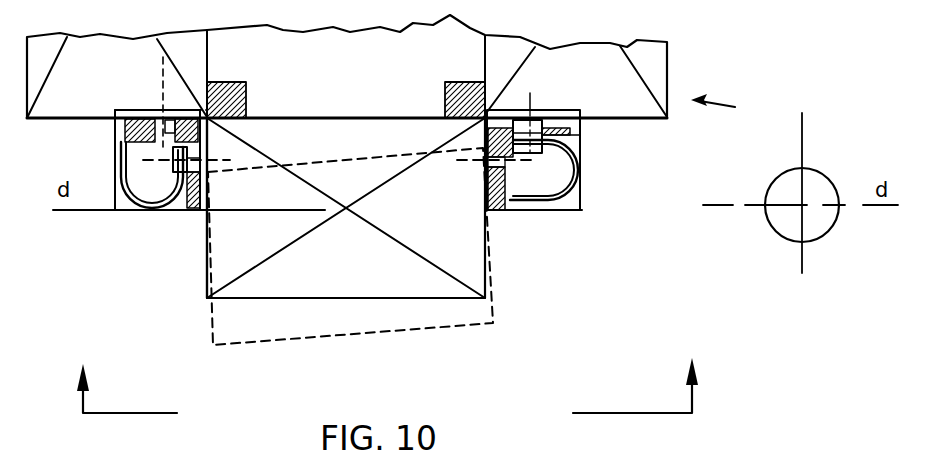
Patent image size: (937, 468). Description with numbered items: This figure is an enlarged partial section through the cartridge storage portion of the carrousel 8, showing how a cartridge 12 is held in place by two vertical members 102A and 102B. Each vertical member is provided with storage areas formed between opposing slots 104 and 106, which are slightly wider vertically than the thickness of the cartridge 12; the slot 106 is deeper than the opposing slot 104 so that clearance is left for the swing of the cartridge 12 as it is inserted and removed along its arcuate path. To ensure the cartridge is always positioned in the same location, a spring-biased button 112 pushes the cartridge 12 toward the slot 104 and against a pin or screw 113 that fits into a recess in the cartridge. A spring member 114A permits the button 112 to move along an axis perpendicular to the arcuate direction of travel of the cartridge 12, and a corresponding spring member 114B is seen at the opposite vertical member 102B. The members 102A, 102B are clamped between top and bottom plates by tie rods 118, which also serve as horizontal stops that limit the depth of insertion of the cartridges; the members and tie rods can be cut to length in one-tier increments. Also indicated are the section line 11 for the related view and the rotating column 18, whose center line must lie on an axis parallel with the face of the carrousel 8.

The carrousel 8 is at (757, 117).
The section line 11- 11 is at (394, 374).
The cartridge 12 is at (658, 63).
The rotating column 18 is at (812, 180).
The vertical member 102A is at (138, 110).
The vertical member 102B is at (580, 133).
The slot 104 is at (480, 212).
The slot 106 is at (206, 144).
The spring-biased button 112 is at (530, 105).
The pin or screw 113 is at (165, 110).
The spring member 114A is at (124, 206).
The spring member 114B is at (530, 210).
The tie rod 118 is at (246, 82).